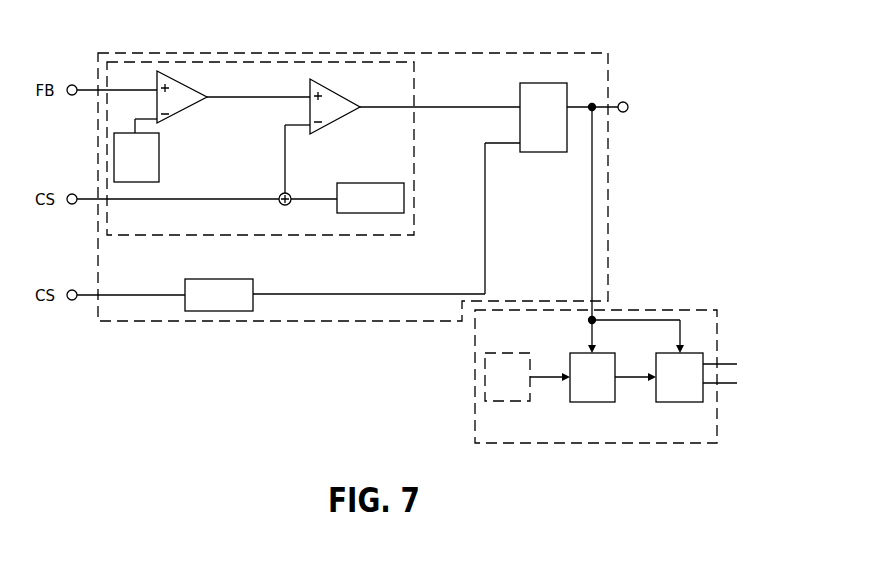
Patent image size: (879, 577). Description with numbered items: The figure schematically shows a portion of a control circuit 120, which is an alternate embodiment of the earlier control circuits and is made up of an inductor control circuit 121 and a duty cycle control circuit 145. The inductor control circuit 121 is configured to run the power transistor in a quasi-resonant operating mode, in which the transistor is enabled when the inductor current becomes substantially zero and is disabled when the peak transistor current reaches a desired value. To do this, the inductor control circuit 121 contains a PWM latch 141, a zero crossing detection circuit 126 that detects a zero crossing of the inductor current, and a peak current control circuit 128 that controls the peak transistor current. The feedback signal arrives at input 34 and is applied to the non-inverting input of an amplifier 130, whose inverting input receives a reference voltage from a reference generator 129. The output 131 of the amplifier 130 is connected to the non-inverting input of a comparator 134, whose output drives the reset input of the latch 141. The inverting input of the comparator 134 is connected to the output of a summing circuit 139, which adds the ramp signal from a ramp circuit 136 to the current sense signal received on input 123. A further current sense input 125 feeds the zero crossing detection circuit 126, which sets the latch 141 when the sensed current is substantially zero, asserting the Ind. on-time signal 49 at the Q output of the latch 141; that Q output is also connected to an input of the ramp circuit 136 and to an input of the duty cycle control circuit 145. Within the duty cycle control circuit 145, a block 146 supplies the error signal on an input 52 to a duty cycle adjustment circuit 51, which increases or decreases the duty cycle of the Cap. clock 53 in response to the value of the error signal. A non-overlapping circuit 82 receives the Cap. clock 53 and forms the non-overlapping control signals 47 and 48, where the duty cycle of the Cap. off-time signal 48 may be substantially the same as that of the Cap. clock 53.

The input 34 is at (72, 85).
The input 123 is at (72, 194).
The current sense input terminal 125 is at (72, 290).
The amplifier 130 is at (186, 86).
The reference generator 129 is at (159, 158).
The output 131 is at (230, 98).
The comparator 134 is at (340, 94).
The summing circuit 139 is at (287, 205).
The ramp circuit 136 is at (348, 213).
The peak current control circuit 128 is at (414, 222).
The PWM latch 141 is at (532, 152).
The Ind. on-time signal 49 is at (625, 102).
The inductor control circuit 121 is at (609, 175).
The control circuit 120 is at (271, 402).
The zero crossing detection circuit 126 is at (243, 279).
The duty cycle control circuit 145 is at (475, 380).
The signal source block 146 is at (518, 401).
The input 52 is at (562, 374).
The duty cycle adjustment circuit 51 is at (590, 402).
The Cap. clock 53 is at (620, 373).
The non-overlapping circuit 82 is at (662, 402).
The non-overlapping control signal 47 is at (728, 364).
The Cap. off-time signal 48 is at (728, 383).